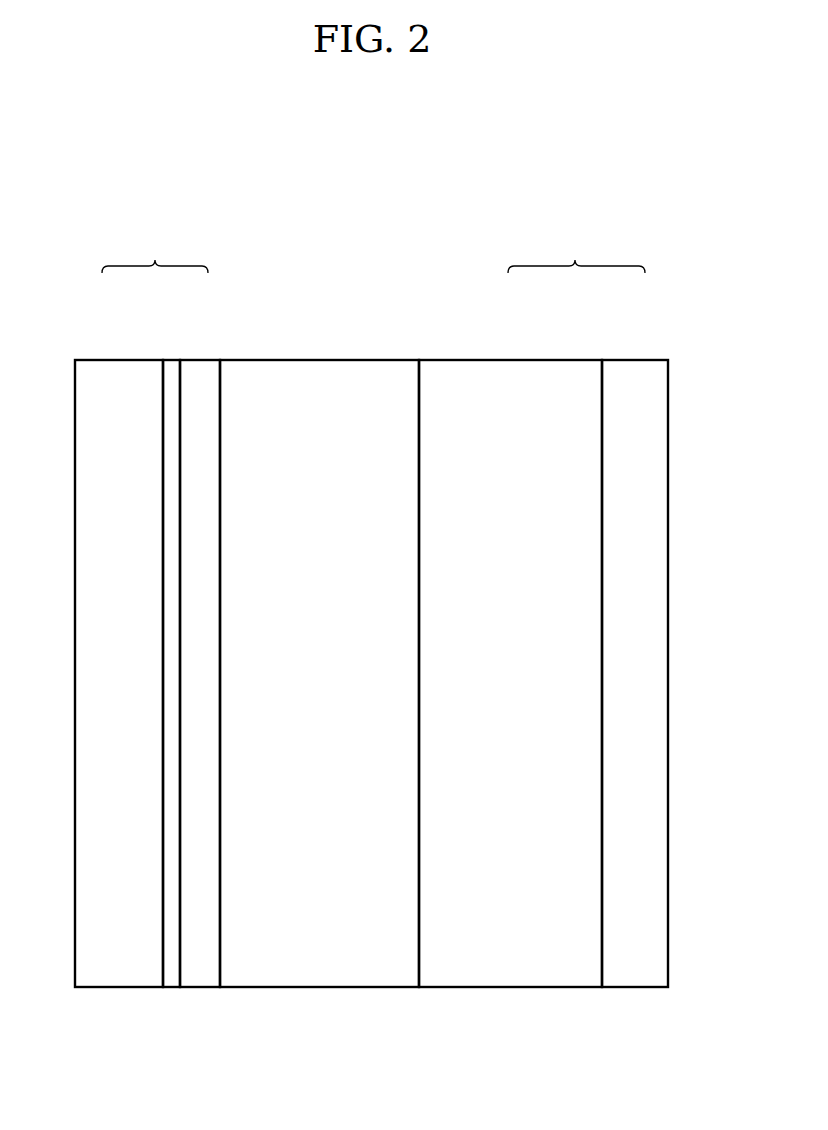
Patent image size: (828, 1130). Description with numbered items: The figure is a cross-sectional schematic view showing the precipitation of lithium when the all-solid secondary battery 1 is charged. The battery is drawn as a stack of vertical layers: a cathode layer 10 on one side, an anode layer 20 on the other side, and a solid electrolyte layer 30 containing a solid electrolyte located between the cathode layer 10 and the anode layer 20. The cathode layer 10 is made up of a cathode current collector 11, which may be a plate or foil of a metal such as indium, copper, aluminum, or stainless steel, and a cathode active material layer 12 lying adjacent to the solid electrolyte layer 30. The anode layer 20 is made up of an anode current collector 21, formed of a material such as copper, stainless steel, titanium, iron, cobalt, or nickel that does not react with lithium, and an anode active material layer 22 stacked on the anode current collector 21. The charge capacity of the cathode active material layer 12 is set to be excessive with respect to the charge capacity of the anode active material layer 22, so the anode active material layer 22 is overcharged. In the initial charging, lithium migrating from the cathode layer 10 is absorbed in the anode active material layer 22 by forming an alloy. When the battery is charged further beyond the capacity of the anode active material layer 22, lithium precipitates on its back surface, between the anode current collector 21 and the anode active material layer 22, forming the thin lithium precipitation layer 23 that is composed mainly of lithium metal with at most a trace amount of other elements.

The all-solid secondary battery 1 is at (429, 293).
The cathode layer 10 is at (576, 252).
The cathode current collector 11 is at (636, 368).
The cathode active material layer 12 is at (514, 368).
The anode layer 20 is at (155, 252).
The anode current collector 21 is at (106, 368).
The anode active material layer 22 is at (200, 368).
The lithium precipitation layer 23 is at (170, 977).
The solid electrolyte layer 30 is at (318, 370).